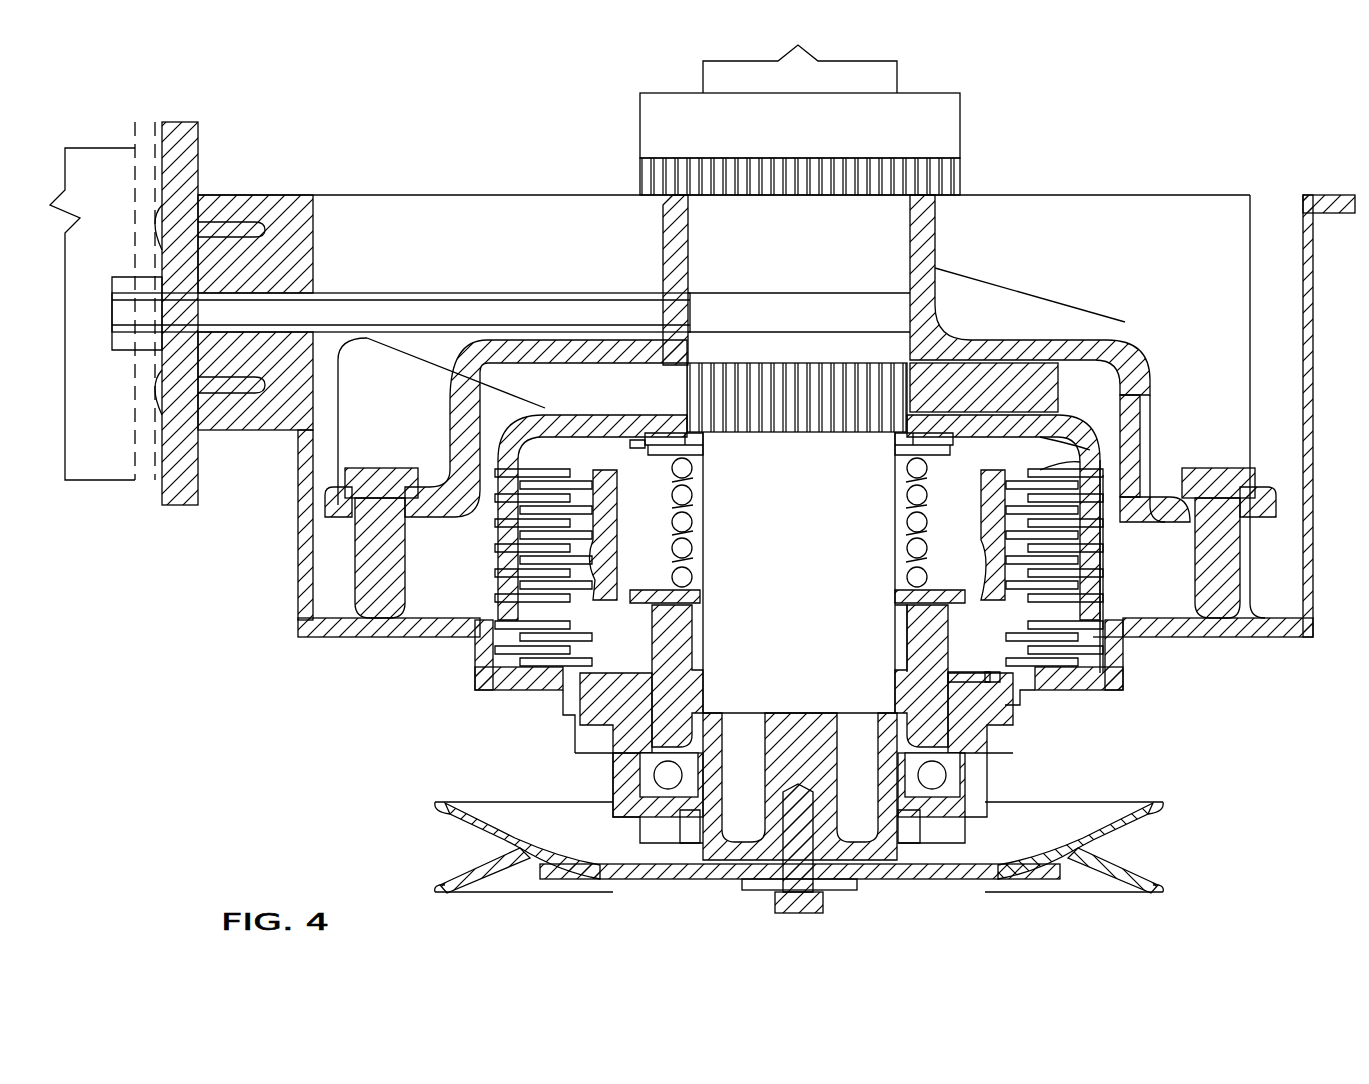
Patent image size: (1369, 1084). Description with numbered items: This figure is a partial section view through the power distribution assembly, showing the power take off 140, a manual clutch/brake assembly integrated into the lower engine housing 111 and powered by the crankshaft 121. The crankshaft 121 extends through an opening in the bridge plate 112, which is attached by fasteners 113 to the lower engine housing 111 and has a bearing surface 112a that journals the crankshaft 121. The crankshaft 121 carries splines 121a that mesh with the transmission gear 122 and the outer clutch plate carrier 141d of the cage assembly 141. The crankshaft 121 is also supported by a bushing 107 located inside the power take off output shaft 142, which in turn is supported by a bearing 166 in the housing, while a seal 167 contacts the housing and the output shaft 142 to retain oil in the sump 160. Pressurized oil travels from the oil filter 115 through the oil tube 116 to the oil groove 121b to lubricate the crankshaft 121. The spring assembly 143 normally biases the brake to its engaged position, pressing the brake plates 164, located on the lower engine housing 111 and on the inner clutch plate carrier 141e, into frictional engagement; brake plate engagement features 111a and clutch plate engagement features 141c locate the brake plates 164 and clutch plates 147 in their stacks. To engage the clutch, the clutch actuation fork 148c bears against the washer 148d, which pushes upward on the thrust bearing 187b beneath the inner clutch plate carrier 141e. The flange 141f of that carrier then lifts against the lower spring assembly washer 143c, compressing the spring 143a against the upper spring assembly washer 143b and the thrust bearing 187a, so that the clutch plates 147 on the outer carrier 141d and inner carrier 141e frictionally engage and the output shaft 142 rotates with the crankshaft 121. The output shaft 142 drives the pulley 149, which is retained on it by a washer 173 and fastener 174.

The bushing 107 is at (896, 630).
The lower engine housing 111 is at (320, 637).
The brake plate engagement features 111a is at (1093, 650).
The bridge plate 112 is at (462, 412).
The bearing surface 112a is at (690, 222).
The fasteners 113 is at (381, 468).
The oil filter 115 is at (103, 480).
The oil tube 116 is at (397, 293).
The crankshaft 121 is at (833, 236).
The splines 121a is at (828, 395).
The oil groove 121b is at (735, 310).
The transmission gear 122 is at (1012, 388).
The power take off 140 is at (518, 730).
The cage assembly 141 is at (1095, 393).
The clutch plate engagement features 141c is at (512, 542).
The outer clutch plate carrier 141d is at (1060, 450).
The inner clutch plate carrier 141e is at (1070, 468).
The flange 141f is at (565, 606).
The power take off output shaft 142 is at (672, 645).
The spring assembly 143 is at (742, 517).
The spring 143a is at (686, 549).
The upper spring assembly washer 143b is at (710, 455).
The lower spring assembly washer 143c is at (700, 596).
The clutch plates 147 is at (1058, 561).
The clutch actuation fork 148c is at (625, 720).
The washer 148d is at (945, 688).
The pulley 149 is at (1123, 878).
The sump 160 is at (1113, 613).
The brake plates 164 is at (1058, 650).
The bearing 166 is at (668, 785).
The seal 167 is at (920, 822).
The washer 173 is at (848, 892).
The fastener 174 is at (775, 905).
The thrust bearing 187a is at (650, 438).
The thrust bearing 187b is at (1010, 690).